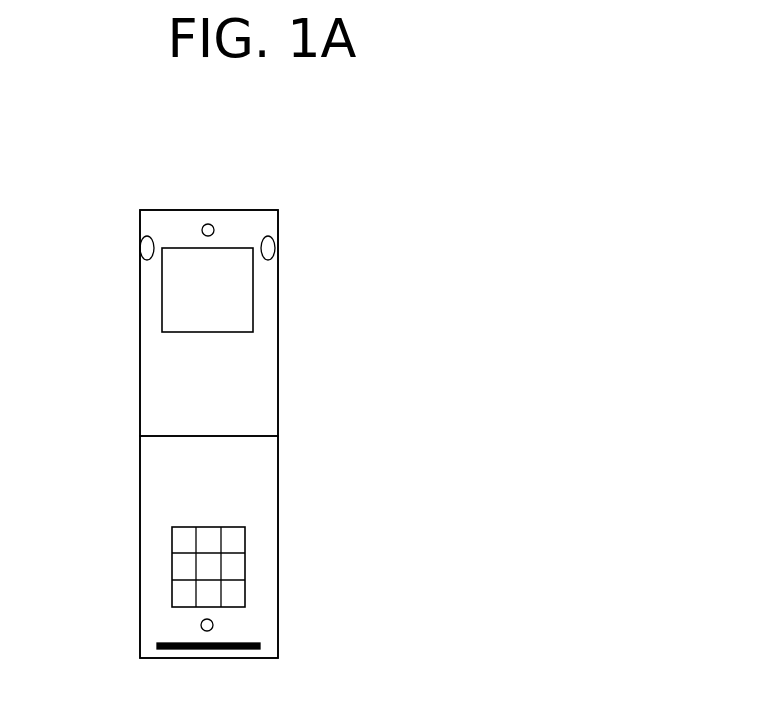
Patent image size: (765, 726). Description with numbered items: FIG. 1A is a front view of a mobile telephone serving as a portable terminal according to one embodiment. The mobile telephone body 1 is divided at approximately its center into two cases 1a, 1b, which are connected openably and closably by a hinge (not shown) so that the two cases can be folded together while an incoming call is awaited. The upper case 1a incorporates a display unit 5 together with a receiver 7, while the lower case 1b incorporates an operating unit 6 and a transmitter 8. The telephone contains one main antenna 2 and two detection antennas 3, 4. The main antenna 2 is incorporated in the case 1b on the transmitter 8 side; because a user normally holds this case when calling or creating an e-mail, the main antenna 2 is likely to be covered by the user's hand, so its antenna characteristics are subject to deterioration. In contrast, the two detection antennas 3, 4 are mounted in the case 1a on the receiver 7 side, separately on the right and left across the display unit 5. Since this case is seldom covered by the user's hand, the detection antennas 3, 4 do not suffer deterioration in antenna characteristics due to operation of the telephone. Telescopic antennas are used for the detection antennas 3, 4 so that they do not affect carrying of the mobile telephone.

The mobile telephone body 1 is at (388, 395).
The case 1a is at (279, 408).
The case 1b is at (279, 460).
The main antenna 2 is at (261, 646).
The detection antenna 3 is at (140, 245).
The detection antenna 4 is at (278, 245).
The display unit 5 is at (243, 303).
The operating unit 6 is at (245, 540).
The receiver 7 is at (213, 222).
The transmitter 8 is at (212, 622).